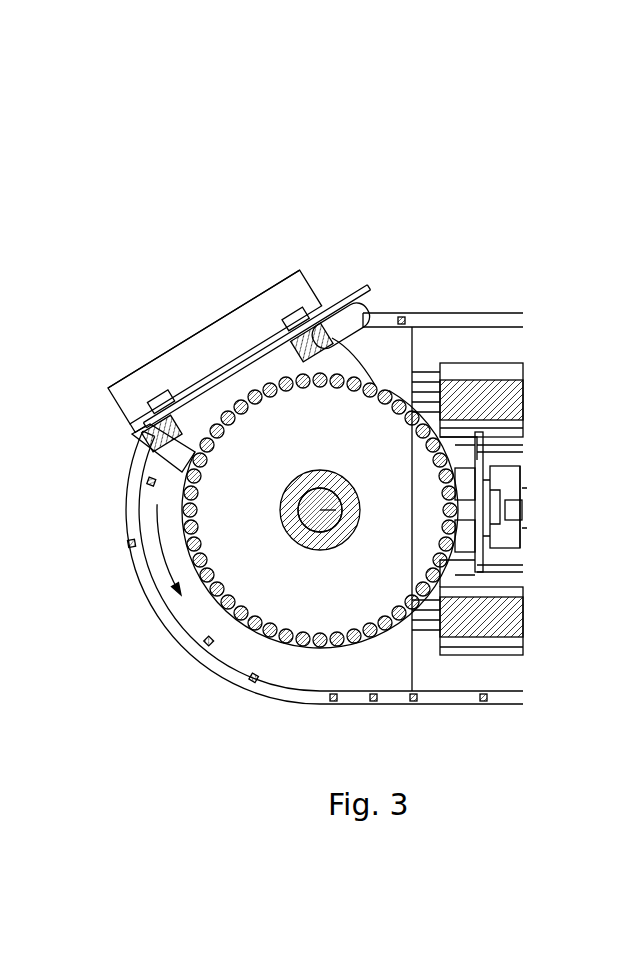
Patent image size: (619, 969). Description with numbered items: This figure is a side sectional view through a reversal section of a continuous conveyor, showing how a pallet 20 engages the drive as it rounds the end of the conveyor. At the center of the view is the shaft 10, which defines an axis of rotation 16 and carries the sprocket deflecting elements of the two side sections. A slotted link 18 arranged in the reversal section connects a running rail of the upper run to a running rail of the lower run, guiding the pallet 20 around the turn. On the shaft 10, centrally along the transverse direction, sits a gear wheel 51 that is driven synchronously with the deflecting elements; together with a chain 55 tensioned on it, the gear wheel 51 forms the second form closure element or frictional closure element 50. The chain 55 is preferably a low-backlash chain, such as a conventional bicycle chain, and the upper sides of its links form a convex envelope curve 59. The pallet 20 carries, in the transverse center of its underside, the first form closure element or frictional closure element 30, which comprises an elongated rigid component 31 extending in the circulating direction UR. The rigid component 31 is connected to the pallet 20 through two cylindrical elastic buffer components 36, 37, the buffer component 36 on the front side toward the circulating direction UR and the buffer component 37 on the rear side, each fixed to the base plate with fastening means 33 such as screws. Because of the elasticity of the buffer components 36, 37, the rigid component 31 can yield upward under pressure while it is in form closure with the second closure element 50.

The shaft 10 is at (320, 510).
The axis of rotation 16 is at (320, 510).
The slotted link 18 is at (494, 340).
The pallet 20 is at (208, 300).
The first form closure element or frictional closure element 30 is at (225, 392).
The rigid component 31 is at (245, 385).
The fastening means 33 is at (297, 318).
The buffer component 36 is at (135, 438).
The buffer component 37 is at (330, 338).
The second form closure element or frictional closure element 50 is at (212, 613).
The gear wheel 51 is at (250, 530).
The chain 55 is at (238, 633).
The convex envelope curve 59 is at (285, 650).
The circulating direction UR is at (147, 577).